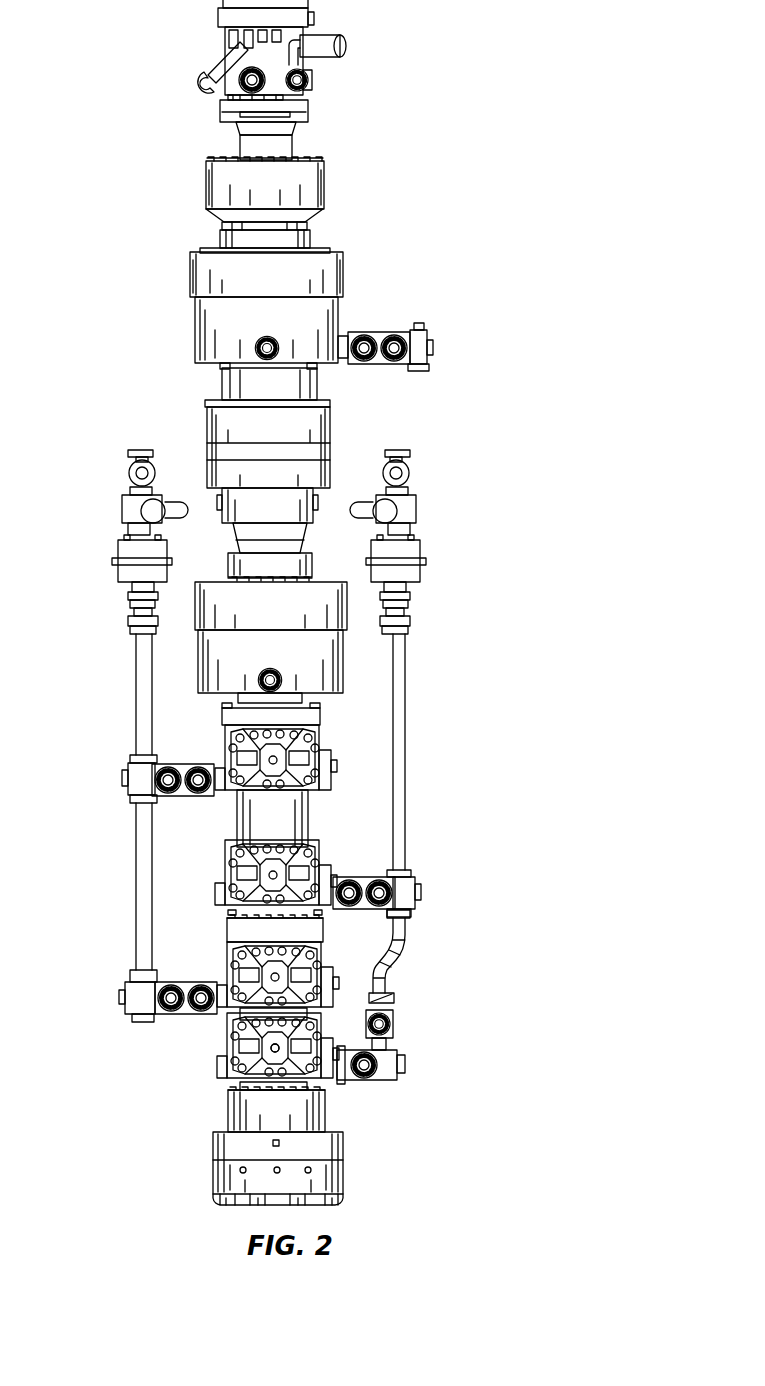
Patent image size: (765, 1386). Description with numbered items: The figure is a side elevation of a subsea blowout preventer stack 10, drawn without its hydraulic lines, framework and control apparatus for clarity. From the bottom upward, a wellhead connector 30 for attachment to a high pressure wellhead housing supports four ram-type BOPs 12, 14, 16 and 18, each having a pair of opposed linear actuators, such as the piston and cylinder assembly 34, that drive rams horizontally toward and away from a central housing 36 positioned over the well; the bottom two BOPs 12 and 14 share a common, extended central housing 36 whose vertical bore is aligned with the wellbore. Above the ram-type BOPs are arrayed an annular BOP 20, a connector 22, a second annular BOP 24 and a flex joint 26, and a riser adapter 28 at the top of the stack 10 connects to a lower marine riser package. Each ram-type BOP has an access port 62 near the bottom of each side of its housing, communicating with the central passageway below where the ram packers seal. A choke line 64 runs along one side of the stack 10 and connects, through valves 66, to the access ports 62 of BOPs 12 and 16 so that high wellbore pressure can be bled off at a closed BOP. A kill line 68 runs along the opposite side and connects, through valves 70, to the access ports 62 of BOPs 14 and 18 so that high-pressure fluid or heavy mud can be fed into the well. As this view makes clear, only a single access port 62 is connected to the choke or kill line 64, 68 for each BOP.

The subsea BOP stack 10 is at (463, 462).
The ram-type BOP 12 is at (228, 1028).
The ram-type BOP 14 is at (230, 946).
The ram-type BOP 16 is at (237, 850).
The ram-type BOP 18 is at (318, 790).
The annular BOP 20 is at (332, 668).
The connector 22 is at (318, 426).
The second annular BOP 24 is at (205, 330).
The flex joint 26 is at (315, 186).
The riser adapter 28 is at (228, 42).
The wellhead connector 30 is at (225, 1175).
The piston and cylinder assembly 34 is at (270, 1050).
The central housing 36 is at (340, 1010).
The access port 62 is at (335, 776).
The choke line 64 is at (400, 735).
The valve 66 is at (365, 1080).
The kill line 68 is at (142, 686).
The valve 70 is at (200, 983).